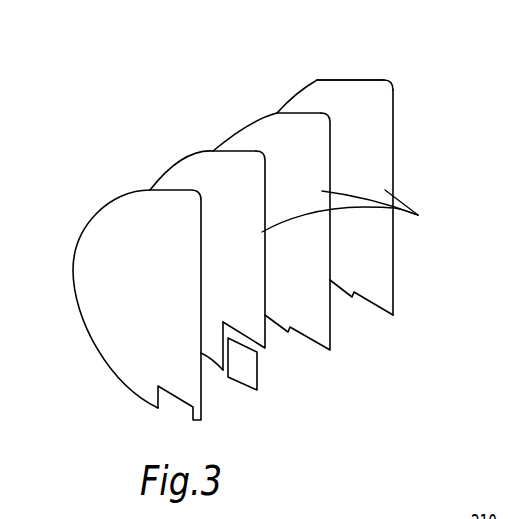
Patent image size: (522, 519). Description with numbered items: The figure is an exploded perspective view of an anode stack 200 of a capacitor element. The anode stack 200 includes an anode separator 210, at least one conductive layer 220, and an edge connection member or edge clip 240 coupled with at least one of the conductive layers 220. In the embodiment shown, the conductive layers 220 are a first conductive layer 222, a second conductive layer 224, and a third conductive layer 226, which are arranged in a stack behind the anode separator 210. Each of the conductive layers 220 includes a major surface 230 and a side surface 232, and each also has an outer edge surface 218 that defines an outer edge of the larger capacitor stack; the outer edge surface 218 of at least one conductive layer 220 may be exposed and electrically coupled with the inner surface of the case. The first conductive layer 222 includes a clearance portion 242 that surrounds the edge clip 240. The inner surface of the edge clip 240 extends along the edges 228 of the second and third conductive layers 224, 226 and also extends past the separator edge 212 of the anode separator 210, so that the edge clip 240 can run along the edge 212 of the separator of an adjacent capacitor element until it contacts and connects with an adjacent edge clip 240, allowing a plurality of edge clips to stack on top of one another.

The anode stack 200 is at (125, 50).
The anode separator 210 is at (137, 292).
The separator edge 212 is at (79, 242).
The outer edge surface 218 is at (195, 154).
The conductive layer 220 is at (357, 216).
The first conductive layer 222 is at (219, 280).
The second conductive layer 224 is at (246, 125).
The third conductive layer 226 is at (361, 168).
The edges of the second and third conductive layers 228 is at (313, 80).
The major surface 230 is at (393, 259).
The side surface 232 is at (393, 287).
The edge clip 240 is at (258, 372).
The clearance portion 242 is at (227, 375).